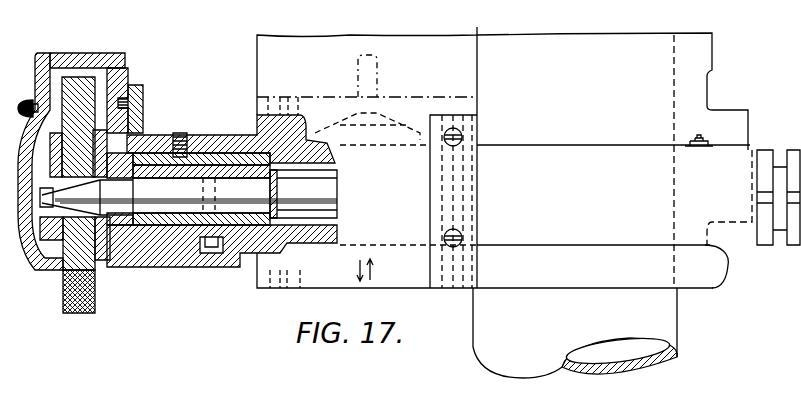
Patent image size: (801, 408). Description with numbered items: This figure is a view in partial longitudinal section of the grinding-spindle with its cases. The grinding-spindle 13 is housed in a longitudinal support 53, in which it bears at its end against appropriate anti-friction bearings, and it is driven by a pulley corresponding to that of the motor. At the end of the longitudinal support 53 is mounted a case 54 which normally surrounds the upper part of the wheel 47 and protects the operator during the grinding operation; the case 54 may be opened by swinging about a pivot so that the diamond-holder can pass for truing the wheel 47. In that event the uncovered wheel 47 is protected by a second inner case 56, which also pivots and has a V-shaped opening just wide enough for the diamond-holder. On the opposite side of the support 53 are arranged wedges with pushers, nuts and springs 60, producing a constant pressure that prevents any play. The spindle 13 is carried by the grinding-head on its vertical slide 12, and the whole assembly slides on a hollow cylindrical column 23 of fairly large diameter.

The vertical slide 12 is at (723, 137).
The grinding-spindle 13 is at (258, 258).
The cylindrical column 23 is at (658, 317).
The wheel 47 is at (95, 303).
The longitudinal support 53 is at (193, 145).
The case 54 is at (95, 53).
The inner case 56 is at (50, 70).
The springs 60 is at (465, 237).